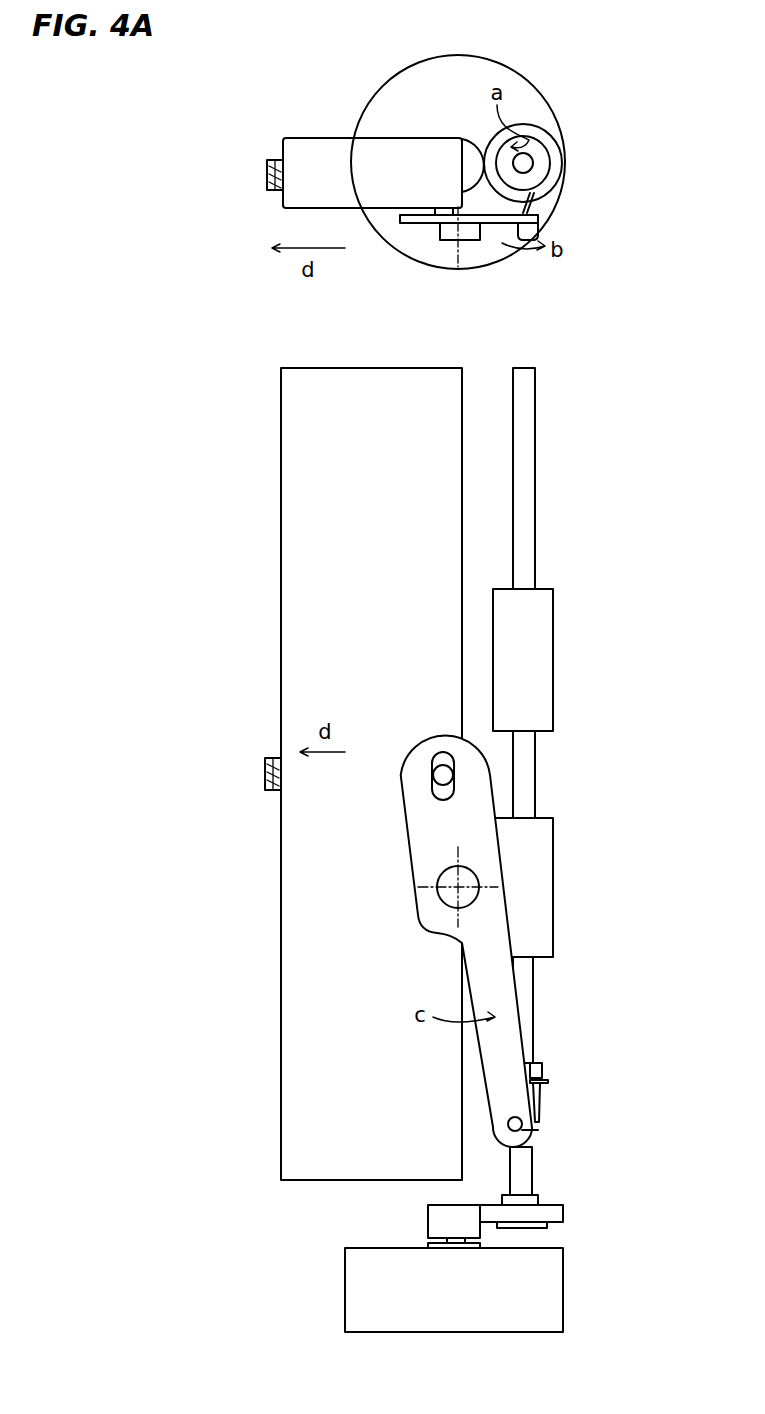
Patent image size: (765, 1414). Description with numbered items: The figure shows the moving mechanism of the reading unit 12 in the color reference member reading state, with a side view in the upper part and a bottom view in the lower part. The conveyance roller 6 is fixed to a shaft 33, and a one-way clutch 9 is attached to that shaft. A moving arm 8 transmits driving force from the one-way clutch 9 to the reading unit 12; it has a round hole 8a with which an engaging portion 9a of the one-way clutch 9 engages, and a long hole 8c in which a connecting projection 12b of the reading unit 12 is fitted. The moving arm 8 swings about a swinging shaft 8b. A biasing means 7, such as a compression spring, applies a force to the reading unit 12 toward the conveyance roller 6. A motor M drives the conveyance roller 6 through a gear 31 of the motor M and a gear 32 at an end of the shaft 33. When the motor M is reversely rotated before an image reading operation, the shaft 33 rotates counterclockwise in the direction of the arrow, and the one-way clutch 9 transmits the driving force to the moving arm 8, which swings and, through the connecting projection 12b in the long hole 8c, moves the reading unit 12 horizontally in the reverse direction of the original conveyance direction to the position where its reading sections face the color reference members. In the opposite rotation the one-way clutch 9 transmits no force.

The biasing means 7 is at (275, 160).
The reading unit 12 is at (308, 155).
The connecting projection 12b is at (437, 241).
The conveyance roller 6 is at (545, 176).
The shaft 33 is at (537, 791).
The moving arm 8 is at (413, 226).
The round hole 8a is at (512, 1137).
The swinging shaft 8b is at (468, 241).
The long hole 8c is at (437, 756).
The one-way clutch 9 is at (544, 1108).
The engaging portion 9a is at (540, 211).
The gear 31 is at (428, 1210).
The gear 32 is at (563, 1213).
The motor M is at (563, 1272).